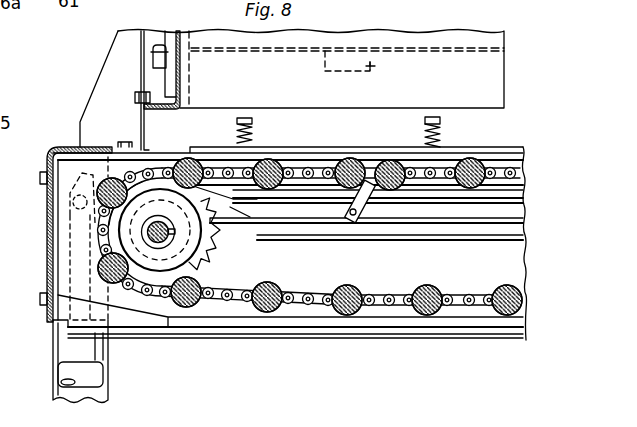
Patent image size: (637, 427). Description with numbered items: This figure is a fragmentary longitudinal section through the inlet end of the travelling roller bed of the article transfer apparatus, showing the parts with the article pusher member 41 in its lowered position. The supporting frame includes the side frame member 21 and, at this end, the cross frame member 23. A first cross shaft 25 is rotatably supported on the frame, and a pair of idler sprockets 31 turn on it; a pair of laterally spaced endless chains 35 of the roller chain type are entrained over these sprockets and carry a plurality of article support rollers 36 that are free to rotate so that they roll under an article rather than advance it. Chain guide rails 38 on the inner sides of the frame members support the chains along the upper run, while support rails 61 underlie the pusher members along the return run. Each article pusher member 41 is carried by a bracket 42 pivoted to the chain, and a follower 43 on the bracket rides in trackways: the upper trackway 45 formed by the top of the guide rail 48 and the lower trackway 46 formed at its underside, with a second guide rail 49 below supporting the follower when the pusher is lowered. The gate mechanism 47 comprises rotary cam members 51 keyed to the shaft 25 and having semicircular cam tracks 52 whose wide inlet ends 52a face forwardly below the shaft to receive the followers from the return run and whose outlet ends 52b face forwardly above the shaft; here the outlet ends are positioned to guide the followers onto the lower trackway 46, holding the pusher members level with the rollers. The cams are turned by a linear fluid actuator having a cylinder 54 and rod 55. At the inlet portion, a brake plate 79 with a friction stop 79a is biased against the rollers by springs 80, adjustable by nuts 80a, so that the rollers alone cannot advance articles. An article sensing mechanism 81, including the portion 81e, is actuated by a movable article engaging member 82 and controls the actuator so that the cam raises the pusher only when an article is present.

The side frame member 21 is at (303, 290).
The cross frame member 23 is at (47, 233).
The first cross shaft 25 is at (168, 238).
The idler sprocket 31 is at (213, 293).
The endless chain 35 is at (58, 295).
The article support roller 36 is at (417, 287).
The chain guide rail 38 is at (500, 170).
The article pusher member 41 is at (352, 161).
The bracket 42 is at (385, 200).
The follower 43 is at (370, 205).
The upper trackway 45 is at (524, 186).
The lower trackway 46 is at (490, 202).
The gate mechanism 47 is at (160, 272).
The guide rail 48 is at (527, 196).
The second guide rail 49 is at (468, 224).
The rotary cam member 51 is at (142, 270).
The cam track 52 is at (148, 197).
The inlet end 52a is at (165, 270).
The outlet end 52b is at (223, 220).
The cylinder 54 is at (96, 380).
The rod 55 is at (72, 272).
The support rail 61 is at (62, 318).
The brake plate 79 is at (278, 147).
The friction stop 79a is at (211, 154).
The spring 80 is at (442, 137).
The nut 80a is at (431, 117).
The article sensing mechanism 81 is at (374, 68).
The switch actuator 81e is at (350, 60).
The movable article engaging member 82 is at (490, 80).